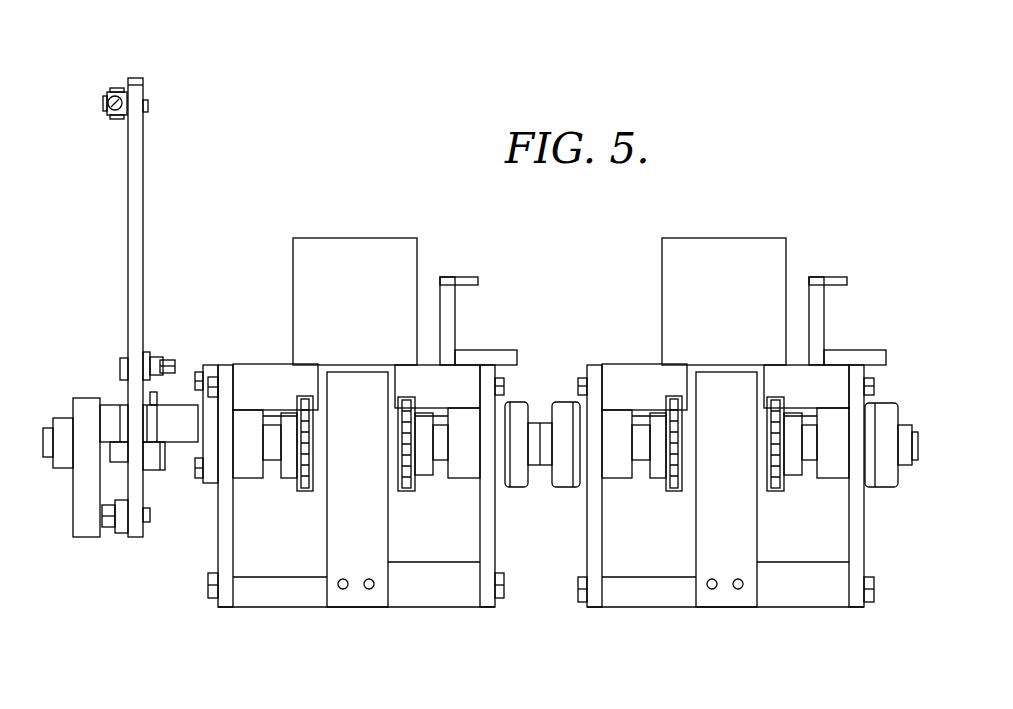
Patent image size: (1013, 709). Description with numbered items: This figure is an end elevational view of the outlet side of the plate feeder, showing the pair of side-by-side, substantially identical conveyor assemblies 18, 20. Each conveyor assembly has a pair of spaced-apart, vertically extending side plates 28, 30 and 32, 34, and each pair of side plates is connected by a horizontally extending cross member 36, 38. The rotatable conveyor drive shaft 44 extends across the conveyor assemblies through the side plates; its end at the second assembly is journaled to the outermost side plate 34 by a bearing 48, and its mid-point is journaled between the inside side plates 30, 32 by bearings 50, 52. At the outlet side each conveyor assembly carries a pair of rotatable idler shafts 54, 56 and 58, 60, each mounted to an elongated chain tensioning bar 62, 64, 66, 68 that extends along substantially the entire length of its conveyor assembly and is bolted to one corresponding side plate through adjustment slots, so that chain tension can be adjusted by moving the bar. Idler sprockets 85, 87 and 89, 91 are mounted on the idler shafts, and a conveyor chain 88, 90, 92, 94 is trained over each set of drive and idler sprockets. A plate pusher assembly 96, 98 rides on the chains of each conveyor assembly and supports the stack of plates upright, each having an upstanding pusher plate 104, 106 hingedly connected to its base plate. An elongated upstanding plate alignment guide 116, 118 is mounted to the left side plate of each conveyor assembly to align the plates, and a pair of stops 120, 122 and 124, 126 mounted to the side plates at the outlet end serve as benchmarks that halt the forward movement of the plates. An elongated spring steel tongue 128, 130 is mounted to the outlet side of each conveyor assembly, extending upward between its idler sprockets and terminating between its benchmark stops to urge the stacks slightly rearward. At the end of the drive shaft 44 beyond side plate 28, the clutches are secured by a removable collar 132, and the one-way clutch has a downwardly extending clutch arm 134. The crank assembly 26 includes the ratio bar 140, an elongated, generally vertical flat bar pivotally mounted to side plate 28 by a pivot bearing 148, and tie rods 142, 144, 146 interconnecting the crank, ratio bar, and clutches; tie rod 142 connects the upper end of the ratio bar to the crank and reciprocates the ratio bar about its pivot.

The conveyor assembly 18 is at (350, 172).
The conveyor assembly 20 is at (725, 346).
The crank assembly 26 is at (108, 298).
The side plate 28 is at (222, 548).
The side plate 30 is at (490, 562).
The side plate 32 is at (574, 498).
The side plate 34 is at (879, 486).
The cross member 36 is at (290, 605).
The cross member 38 is at (725, 603).
The conveyor drive shaft 44 is at (47, 455).
The bearing 48 is at (891, 428).
The bearing 50 is at (512, 410).
The bearing 52 is at (565, 472).
The idler shaft 54 is at (272, 462).
The idler shaft 56 is at (440, 458).
The idler shaft 58 is at (629, 479).
The idler shaft 60 is at (821, 476).
The chain tensioning bar 62 is at (258, 478).
The chain tensioning bar 64 is at (468, 472).
The chain tensioning bar 66 is at (593, 472).
The chain tensioning bar 68 is at (845, 466).
The idler sprocket 85 is at (290, 478).
The idler sprocket 87 is at (428, 468).
The conveyor chain 88 is at (312, 448).
The idler sprocket 89 is at (658, 477).
The conveyor chain 90 is at (400, 465).
The idler sprocket 91 is at (788, 475).
The conveyor chain 92 is at (696, 446).
The conveyor chain 94 is at (751, 444).
The plate pusher assembly 96 is at (291, 229).
The plate pusher assembly 98 is at (744, 269).
The pusher plate 104 is at (393, 246).
The pusher plate 106 is at (708, 282).
The plate alignment guide 116 is at (445, 278).
The plate alignment guide 118 is at (850, 297).
The stop 120 is at (266, 380).
The stop 122 is at (458, 380).
The stop 124 is at (644, 361).
The stop 126 is at (830, 361).
The spring steel tongue 128 is at (345, 548).
The spring steel tongue 130 is at (688, 489).
The removable collar 132 is at (62, 428).
The clutch arm 134 is at (78, 540).
The ratio bar 140 is at (137, 176).
The tie rod 142 is at (118, 90).
The tie rod 144 is at (115, 538).
The tie rod 146 is at (160, 355).
The pivot bearing 148 is at (95, 412).